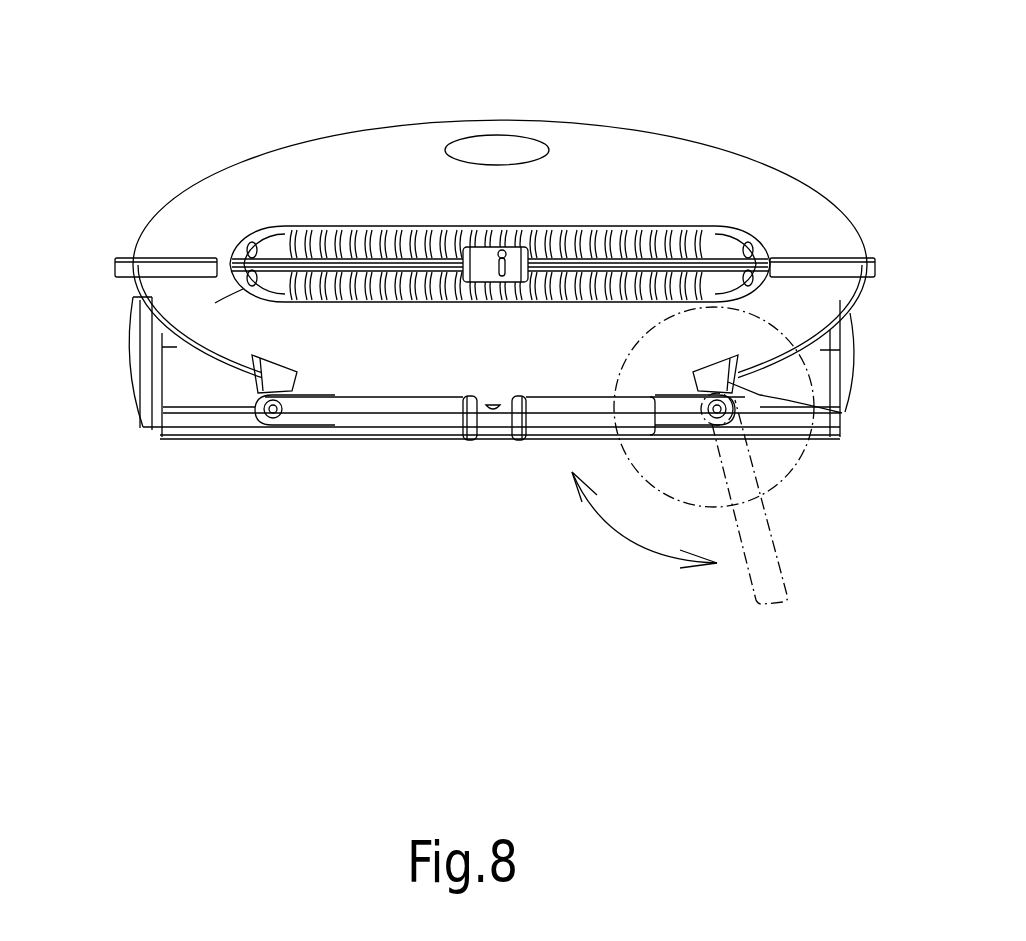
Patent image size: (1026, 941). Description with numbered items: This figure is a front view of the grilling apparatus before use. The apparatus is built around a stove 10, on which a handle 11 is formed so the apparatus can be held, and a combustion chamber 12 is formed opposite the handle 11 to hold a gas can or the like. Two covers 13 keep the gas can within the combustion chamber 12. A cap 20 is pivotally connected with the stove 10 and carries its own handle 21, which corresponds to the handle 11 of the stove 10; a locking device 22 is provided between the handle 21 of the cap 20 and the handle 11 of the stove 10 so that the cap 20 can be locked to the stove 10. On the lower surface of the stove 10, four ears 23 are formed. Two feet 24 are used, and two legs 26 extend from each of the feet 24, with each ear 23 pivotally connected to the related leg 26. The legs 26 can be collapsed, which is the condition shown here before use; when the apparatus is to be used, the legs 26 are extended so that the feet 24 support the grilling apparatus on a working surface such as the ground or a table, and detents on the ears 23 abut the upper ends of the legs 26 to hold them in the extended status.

The stove 10 is at (168, 483).
The handle 11 is at (243, 289).
The combustion chamber 12 is at (243, 430).
The cover 13 is at (132, 373).
The cap 20 is at (342, 157).
The handle 21 is at (297, 227).
The locking device 22 is at (497, 282).
The ear 23 is at (842, 413).
The foot 24 is at (387, 429).
The leg 26 is at (303, 425).